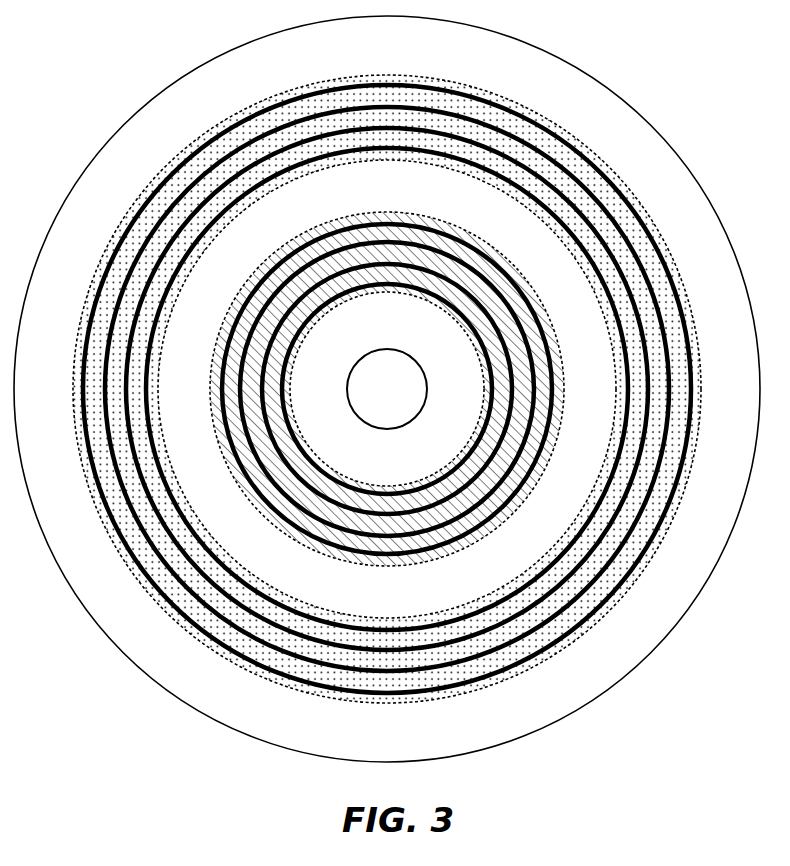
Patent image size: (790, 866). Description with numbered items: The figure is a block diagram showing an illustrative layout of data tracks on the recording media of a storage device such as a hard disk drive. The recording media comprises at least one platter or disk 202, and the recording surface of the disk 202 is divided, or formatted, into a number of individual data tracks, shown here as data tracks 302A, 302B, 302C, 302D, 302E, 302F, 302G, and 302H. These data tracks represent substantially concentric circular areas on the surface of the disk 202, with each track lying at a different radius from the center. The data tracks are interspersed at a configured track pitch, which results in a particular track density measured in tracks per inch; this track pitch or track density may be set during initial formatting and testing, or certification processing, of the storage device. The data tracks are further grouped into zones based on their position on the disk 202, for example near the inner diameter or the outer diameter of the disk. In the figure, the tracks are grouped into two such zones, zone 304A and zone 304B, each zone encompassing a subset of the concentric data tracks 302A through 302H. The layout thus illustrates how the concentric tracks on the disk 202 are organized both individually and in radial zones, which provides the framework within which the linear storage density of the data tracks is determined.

The disk 202 is at (403, 337).
The data track 302A is at (540, 88).
The data track 302B is at (536, 142).
The data track 302C is at (565, 190).
The data track 302D is at (538, 202).
The data track 302E is at (333, 228).
The data track 302F is at (307, 261).
The data track 302G is at (285, 299).
The data track 302H is at (300, 328).
The zone 304A is at (380, 76).
The zone 304B is at (400, 214).